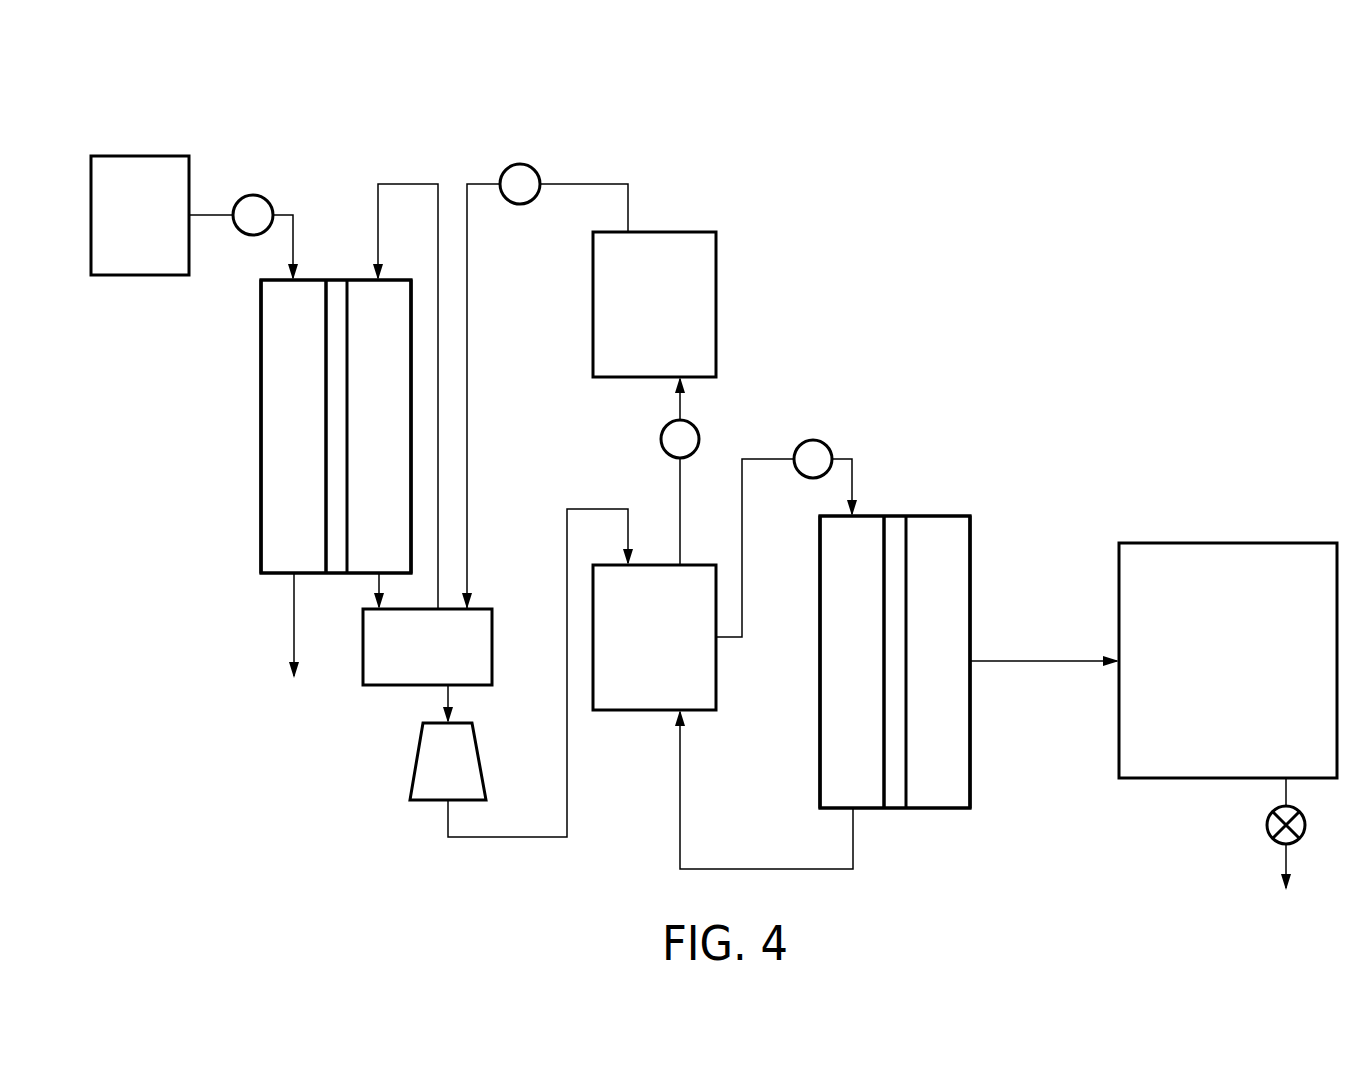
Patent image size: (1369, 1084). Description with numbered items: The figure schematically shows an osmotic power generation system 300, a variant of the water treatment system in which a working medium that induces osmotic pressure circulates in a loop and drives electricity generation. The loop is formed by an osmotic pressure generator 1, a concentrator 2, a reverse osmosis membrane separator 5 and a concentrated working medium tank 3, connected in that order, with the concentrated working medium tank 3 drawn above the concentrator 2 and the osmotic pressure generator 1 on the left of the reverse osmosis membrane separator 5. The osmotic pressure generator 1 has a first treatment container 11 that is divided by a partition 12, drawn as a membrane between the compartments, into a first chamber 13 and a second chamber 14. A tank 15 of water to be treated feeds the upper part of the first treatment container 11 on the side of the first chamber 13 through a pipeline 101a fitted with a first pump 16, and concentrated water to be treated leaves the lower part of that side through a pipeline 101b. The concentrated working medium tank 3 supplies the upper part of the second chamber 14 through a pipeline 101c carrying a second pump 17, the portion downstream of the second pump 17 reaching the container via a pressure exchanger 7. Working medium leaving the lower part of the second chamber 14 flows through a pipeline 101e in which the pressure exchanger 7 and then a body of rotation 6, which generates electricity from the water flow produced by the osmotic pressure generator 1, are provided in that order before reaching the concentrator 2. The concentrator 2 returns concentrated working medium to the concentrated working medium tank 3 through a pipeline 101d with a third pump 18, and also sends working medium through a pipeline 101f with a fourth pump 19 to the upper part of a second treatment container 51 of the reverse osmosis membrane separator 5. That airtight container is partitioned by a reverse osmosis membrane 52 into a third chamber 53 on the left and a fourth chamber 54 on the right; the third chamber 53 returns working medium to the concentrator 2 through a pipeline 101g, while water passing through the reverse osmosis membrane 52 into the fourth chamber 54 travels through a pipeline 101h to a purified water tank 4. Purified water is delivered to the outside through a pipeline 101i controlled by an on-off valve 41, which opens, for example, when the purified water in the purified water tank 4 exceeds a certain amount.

The power generation system 300 is at (75, 64).
The osmotic pressure generator 1 is at (255, 302).
The first treatment container 11 is at (261, 332).
The diaphragm 12 is at (333, 379).
The first chamber 13 is at (278, 415).
The second chamber 14 is at (365, 450).
The tank of water to be treated 15 is at (150, 155).
The first pump 16 is at (258, 196).
The second pump 17 is at (520, 164).
The third pump 18 is at (661, 440).
The fourth pump 19 is at (813, 440).
The concentrator 2 is at (625, 712).
The concentrated working medium tank 3 is at (593, 276).
The purified water tank 4 is at (1285, 542).
The on-off valve 41 is at (1305, 825).
The reverse osmosis membrane separator 5 is at (815, 557).
The second treatment container 51 is at (820, 583).
The reverse osmosis membrane 52 is at (893, 631).
The third chamber 53 is at (835, 668).
The fourth chamber 54 is at (920, 705).
The body of rotation 6 is at (480, 752).
The pressure exchanger 7 is at (482, 607).
The pipeline 101a is at (308, 196).
The pipeline 101b is at (294, 616).
The pipeline 101c is at (408, 183).
The pipeline 101d is at (679, 474).
The pipeline 101e is at (379, 584).
The pipeline 101f is at (845, 457).
The pipeline 101g is at (680, 820).
The pipeline 101h is at (1045, 660).
The pipeline 101i is at (1288, 858).